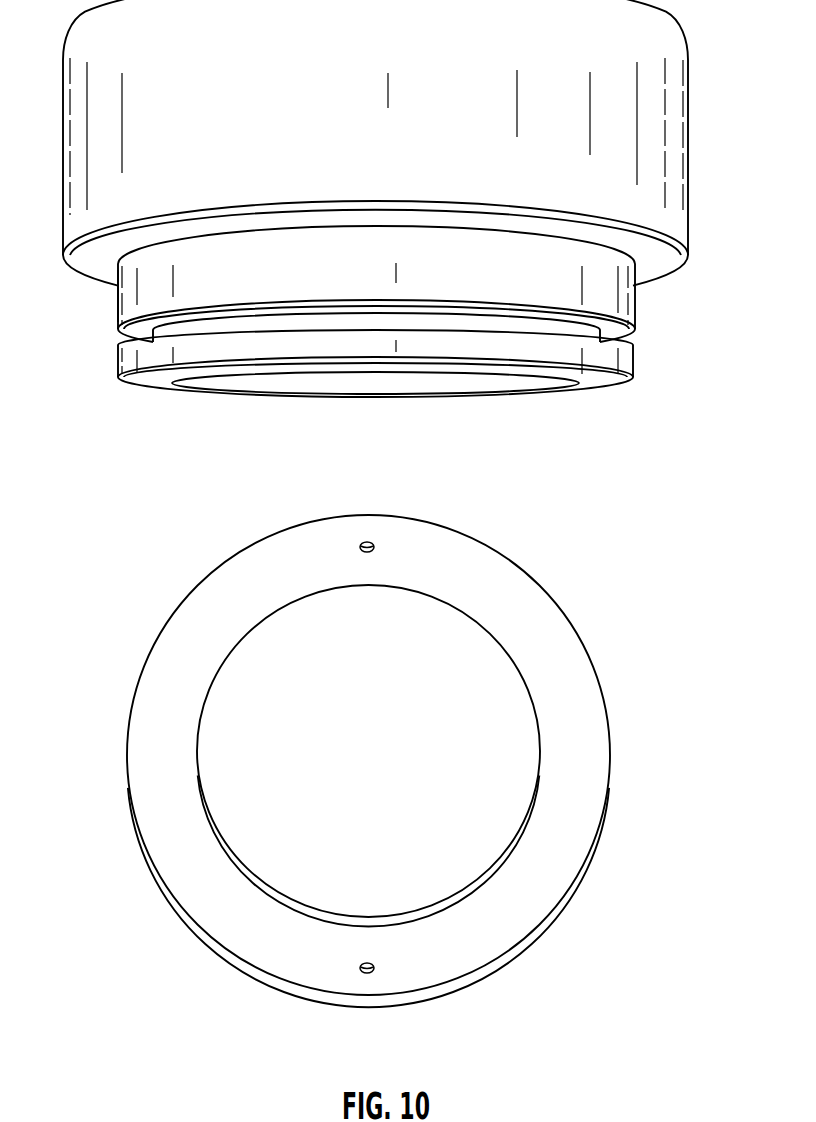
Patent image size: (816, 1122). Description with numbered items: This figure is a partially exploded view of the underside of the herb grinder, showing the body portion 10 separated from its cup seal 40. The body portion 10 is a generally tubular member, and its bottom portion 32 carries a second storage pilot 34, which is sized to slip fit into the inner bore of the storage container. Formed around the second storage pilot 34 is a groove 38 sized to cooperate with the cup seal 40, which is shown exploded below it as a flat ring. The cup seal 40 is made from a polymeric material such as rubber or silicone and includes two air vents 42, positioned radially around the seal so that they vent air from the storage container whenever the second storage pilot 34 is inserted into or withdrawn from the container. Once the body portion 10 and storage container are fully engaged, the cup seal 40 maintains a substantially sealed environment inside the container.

The body portion 10 is at (687, 153).
The bottom portion 32 is at (625, 300).
The second storage pilot 34 is at (118, 305).
The groove 38 is at (627, 337).
The cup seal 40 is at (577, 660).
The air vents 42 is at (369, 543).